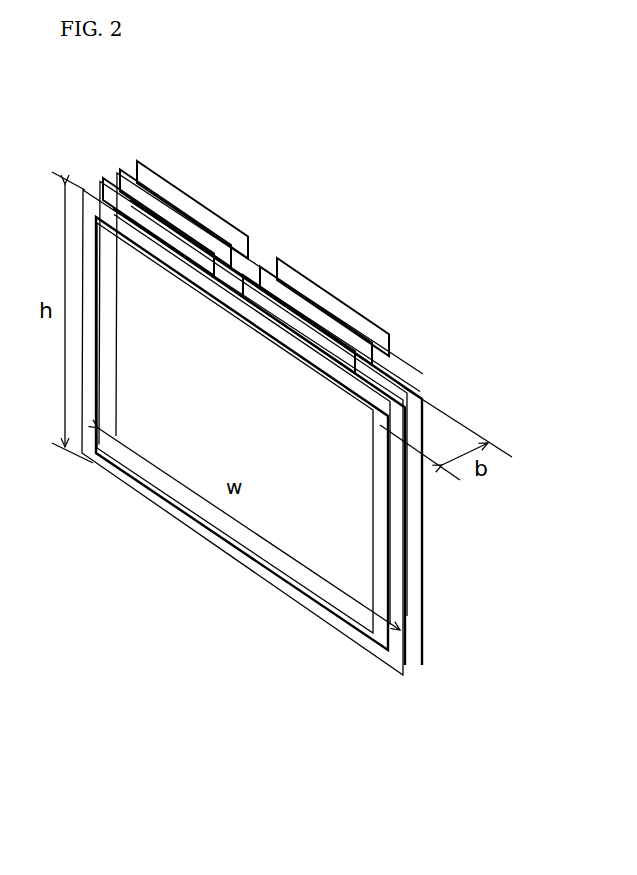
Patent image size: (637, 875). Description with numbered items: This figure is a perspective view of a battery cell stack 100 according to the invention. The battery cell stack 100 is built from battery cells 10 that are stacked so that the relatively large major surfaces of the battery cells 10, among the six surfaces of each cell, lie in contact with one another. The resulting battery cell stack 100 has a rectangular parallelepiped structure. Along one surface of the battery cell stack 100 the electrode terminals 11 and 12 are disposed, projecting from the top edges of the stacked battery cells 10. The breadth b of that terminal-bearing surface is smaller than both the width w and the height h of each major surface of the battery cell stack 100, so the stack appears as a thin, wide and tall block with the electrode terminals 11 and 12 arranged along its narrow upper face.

The battery cell stack 100 is at (134, 139).
The battery cells 10 is at (416, 668).
The electrode terminal 11 is at (147, 200).
The electrode terminal 12 is at (288, 298).